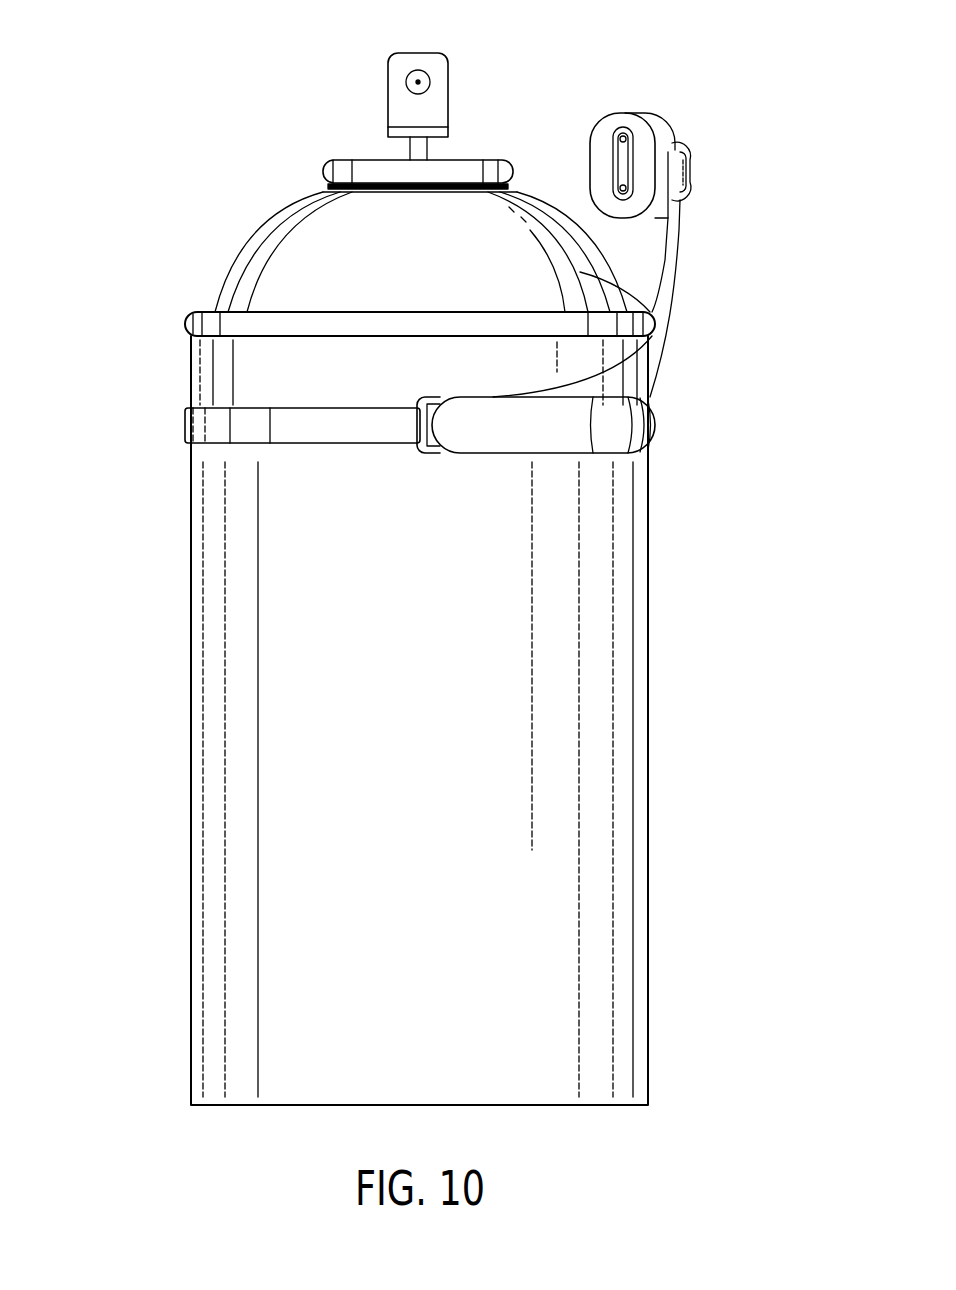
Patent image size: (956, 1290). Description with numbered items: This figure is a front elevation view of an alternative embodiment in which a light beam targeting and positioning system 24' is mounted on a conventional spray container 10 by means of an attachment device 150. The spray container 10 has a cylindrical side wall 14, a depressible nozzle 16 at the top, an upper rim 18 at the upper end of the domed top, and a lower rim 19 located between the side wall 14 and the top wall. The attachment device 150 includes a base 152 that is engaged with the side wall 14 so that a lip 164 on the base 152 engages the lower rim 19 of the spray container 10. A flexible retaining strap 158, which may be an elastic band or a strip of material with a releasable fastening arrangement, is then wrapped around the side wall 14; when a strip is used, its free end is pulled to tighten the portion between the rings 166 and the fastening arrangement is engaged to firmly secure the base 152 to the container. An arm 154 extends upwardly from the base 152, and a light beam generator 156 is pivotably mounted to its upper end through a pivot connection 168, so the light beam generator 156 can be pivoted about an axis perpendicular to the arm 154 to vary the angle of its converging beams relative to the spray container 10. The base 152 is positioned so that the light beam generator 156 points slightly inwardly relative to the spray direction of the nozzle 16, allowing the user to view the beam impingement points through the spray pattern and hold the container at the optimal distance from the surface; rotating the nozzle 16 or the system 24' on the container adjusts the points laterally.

The spray container 10 is at (153, 260).
The side wall 14 is at (648, 585).
The nozzle 16 is at (448, 100).
The upper rim 18 is at (323, 170).
The lower rim 19 is at (185, 323).
The light beam targeting and positioning system 24' is at (785, 59).
The attachment device 150 is at (375, 510).
The base 152 is at (665, 428).
The arm 154 is at (678, 287).
The light beam generator 156 is at (650, 108).
The flexible retaining strap 158 is at (293, 443).
The lip 164 is at (580, 272).
The rings 166 is at (433, 452).
The pivot connection 168 is at (690, 163).